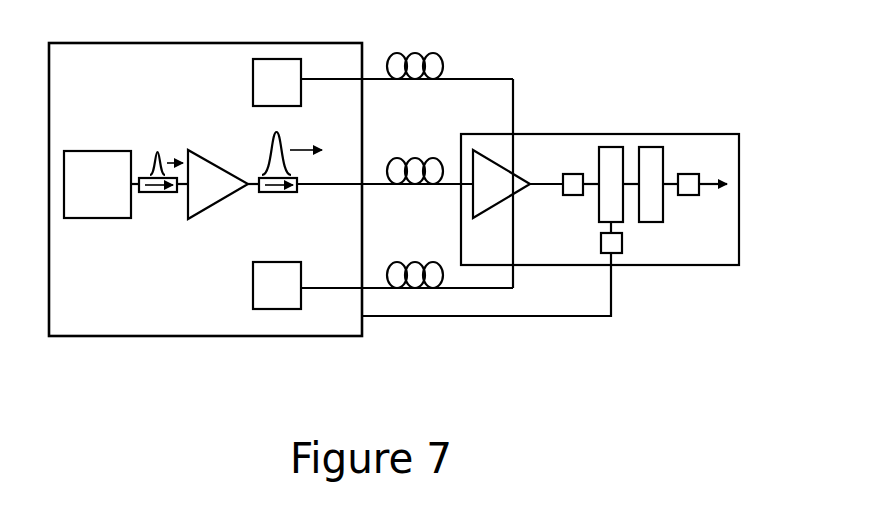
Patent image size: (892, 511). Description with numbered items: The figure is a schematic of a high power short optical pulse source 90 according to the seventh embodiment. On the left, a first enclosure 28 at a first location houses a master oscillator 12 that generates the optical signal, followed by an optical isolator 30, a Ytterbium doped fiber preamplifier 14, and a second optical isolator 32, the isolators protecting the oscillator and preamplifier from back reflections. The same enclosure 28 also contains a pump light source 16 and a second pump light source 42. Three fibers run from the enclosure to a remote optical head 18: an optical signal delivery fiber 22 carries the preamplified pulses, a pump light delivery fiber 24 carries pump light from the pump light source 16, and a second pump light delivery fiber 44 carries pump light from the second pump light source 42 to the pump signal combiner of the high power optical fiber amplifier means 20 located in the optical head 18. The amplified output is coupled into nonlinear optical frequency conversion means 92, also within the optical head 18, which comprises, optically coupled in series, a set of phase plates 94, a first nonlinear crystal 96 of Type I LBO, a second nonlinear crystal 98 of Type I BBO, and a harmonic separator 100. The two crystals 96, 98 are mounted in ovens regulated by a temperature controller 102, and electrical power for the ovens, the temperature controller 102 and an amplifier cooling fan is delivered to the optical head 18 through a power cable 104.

The high power short optical pulse source 90 is at (127, 362).
The first enclosure 28 is at (225, 336).
The master oscillator 12 is at (85, 204).
The optical isolator 30 is at (155, 189).
The preamplifier 14 is at (210, 192).
The optical isolator 32 is at (277, 189).
The optical signal delivery fiber 22 is at (334, 186).
The pump light source 16 is at (268, 78).
The pump light delivery fiber 24 is at (483, 78).
The second pump light source 42 is at (268, 285).
The second pump light delivery fiber 44 is at (335, 288).
The optical head 18 is at (705, 266).
The nonlinear optical frequency conversion means 92 is at (630, 57).
The high power optical fiber amplifier means 20 is at (493, 175).
The set of phase plates 94 is at (570, 186).
The first nonlinear crystal 96 is at (611, 160).
The second nonlinear crystal 98 is at (650, 160).
The harmonic separator 100 is at (690, 186).
The temperature controller 102 is at (612, 243).
The power cable 104 is at (519, 317).